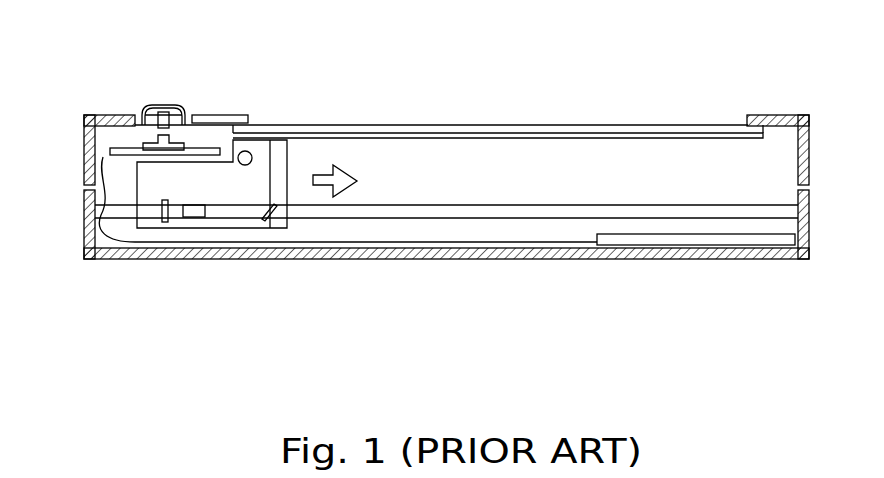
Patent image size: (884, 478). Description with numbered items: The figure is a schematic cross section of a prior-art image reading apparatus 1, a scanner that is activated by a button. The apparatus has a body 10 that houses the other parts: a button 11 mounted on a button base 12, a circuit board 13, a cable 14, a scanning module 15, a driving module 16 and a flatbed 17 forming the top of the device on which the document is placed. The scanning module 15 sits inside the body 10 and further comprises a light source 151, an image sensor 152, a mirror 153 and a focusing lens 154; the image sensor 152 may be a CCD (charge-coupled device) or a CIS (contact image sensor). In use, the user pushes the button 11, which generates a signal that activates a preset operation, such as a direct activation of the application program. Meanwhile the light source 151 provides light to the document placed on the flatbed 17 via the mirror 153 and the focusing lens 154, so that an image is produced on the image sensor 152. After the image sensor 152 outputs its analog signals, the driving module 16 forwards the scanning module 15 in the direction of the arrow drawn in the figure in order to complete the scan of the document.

The image reading apparatus 1 is at (583, 97).
The body 10 is at (83, 242).
The button 11 is at (147, 105).
The button base 12 is at (132, 152).
The circuit board 13 is at (707, 240).
The cable 14 is at (382, 243).
The scanning module 15 is at (288, 148).
The light source 151 is at (240, 151).
The image sensor 152 is at (165, 220).
The mirror 153 is at (273, 226).
The focusing lens 154 is at (192, 218).
The driving module 16 is at (763, 212).
The flatbed 17 is at (667, 130).